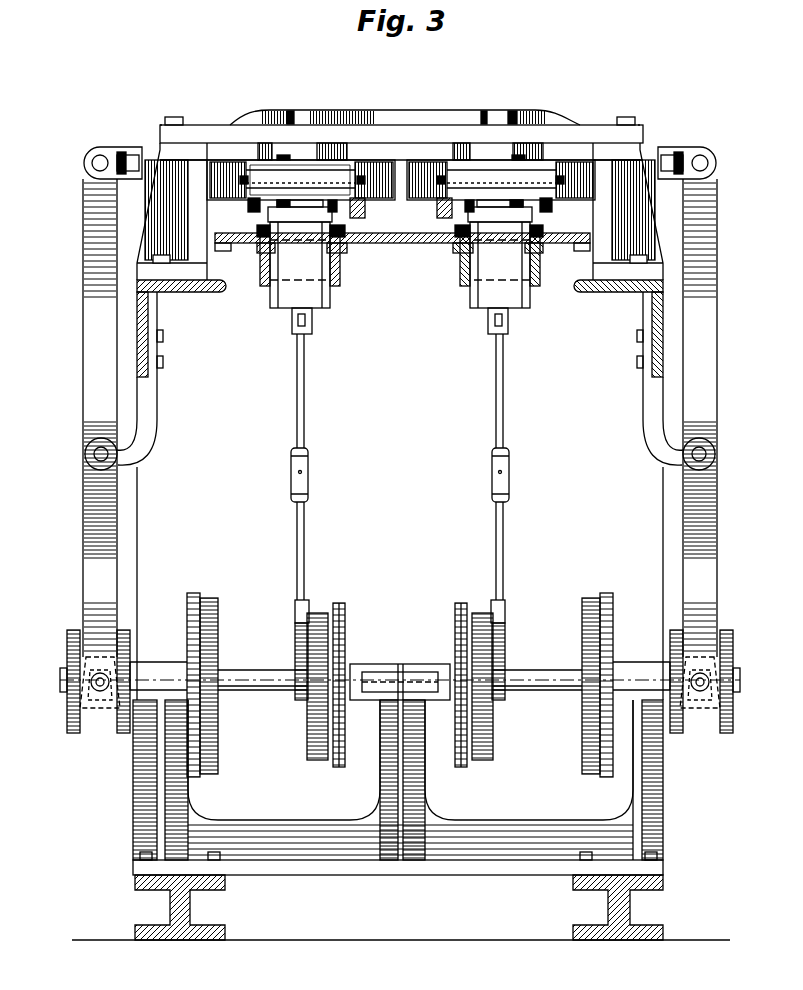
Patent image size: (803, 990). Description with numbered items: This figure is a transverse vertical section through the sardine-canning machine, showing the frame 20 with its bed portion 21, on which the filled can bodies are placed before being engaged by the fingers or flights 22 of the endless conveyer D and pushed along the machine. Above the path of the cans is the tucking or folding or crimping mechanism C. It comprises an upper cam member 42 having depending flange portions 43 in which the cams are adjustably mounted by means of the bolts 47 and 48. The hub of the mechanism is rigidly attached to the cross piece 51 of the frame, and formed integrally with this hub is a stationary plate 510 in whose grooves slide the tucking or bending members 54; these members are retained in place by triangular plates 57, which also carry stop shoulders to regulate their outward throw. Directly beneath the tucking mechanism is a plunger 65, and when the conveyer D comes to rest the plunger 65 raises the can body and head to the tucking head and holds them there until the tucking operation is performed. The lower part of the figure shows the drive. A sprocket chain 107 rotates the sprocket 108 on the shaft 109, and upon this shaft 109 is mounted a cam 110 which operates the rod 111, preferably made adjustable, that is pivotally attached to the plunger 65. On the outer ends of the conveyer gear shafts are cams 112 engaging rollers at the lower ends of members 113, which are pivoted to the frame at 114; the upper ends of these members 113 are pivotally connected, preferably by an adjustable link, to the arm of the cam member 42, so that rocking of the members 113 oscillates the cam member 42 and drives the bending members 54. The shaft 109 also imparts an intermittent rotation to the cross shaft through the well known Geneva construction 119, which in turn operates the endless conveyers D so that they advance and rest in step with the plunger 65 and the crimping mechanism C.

The frame 20 is at (175, 292).
The bed portion 21 is at (390, 235).
The fingers or flights 22 is at (333, 226).
The upper cam member 42 is at (233, 175).
The depending flange portions 43 is at (323, 177).
The bolt 47 is at (452, 158).
The bolt 48 is at (370, 197).
The cross piece 51 is at (407, 128).
The tucking or bending member 54 is at (262, 190).
The triangular plate 57 is at (352, 200).
The plunger 65 is at (400, 257).
The sprocket chain 107 is at (450, 613).
The sprocket 108 is at (452, 663).
The shaft 109 is at (260, 692).
The cam 110 is at (307, 738).
The rod 111 is at (298, 508).
The cam 112 is at (68, 642).
The member 113 is at (83, 600).
The pivot 114 is at (96, 458).
The Geneva construction 119 is at (218, 607).
The stationary plate 510 is at (540, 185).
The tucking or folding or crimping mechanism C is at (389, 171).
The endless conveyer D is at (265, 252).